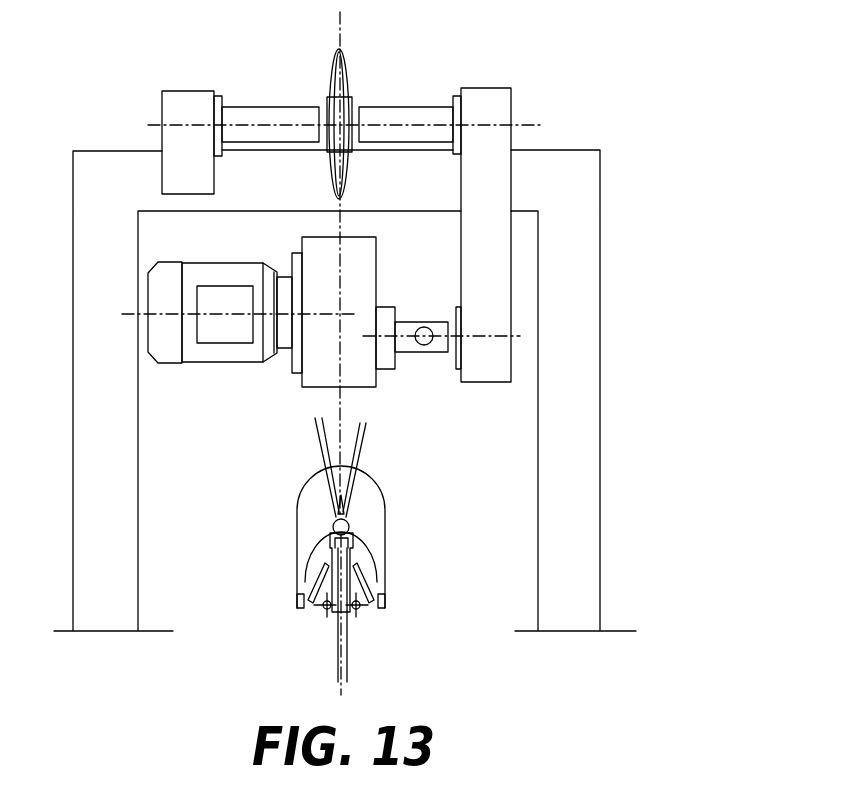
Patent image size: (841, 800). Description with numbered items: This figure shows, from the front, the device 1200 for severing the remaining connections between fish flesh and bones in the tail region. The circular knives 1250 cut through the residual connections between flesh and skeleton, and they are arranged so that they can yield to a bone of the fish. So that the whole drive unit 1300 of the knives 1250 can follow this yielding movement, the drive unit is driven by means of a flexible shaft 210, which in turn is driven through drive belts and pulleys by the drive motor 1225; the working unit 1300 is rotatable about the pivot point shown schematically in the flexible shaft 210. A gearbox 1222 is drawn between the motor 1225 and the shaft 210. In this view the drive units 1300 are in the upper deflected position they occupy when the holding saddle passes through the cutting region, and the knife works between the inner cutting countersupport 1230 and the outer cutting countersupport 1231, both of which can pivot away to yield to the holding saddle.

The device for severing the residual connections 1200 is at (620, 242).
The drive unit 1300 is at (175, 108).
The circular knives 1250 is at (330, 68).
The drive motor 1225 is at (205, 351).
The gearbox 1222 is at (353, 248).
The flexible shaft 210 is at (422, 322).
The inner cutting countersupport 1230 is at (335, 583).
The outer cutting countersupport 1231 is at (356, 588).